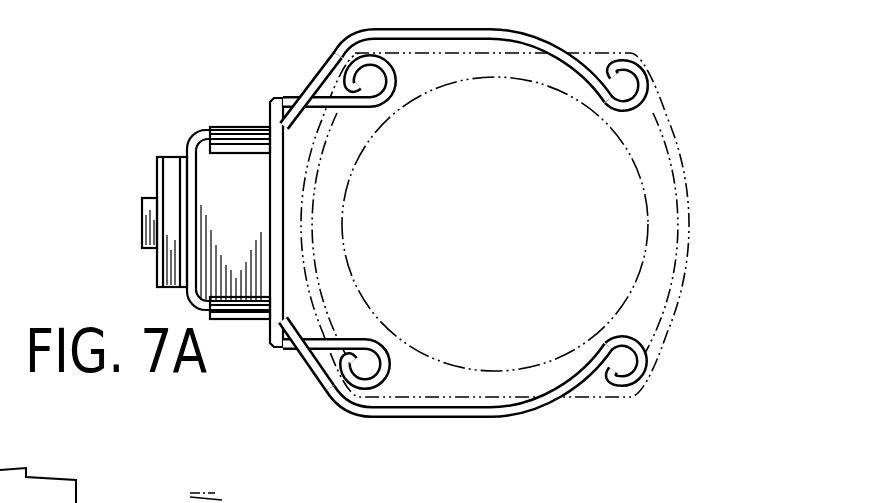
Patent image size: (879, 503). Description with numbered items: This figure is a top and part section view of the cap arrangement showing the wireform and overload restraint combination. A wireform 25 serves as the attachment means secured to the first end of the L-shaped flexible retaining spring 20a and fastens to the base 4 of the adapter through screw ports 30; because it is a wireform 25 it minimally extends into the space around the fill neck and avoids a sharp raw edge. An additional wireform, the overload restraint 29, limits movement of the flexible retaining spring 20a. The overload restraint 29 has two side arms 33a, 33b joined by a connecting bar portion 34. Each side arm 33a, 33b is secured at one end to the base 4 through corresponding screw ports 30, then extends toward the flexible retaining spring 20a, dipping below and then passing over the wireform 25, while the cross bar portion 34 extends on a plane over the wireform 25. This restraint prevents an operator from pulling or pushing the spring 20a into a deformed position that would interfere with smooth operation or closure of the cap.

The base 4 is at (663, 323).
The L-shaped flexible retaining spring 20a is at (152, 285).
The wireform 25 is at (515, 416).
The overload restraint 29 is at (296, 362).
The screw ports 30 is at (348, 361).
The side arm 33a is at (327, 97).
The side arm 33b is at (340, 367).
The connecting bar portion 34 is at (277, 167).